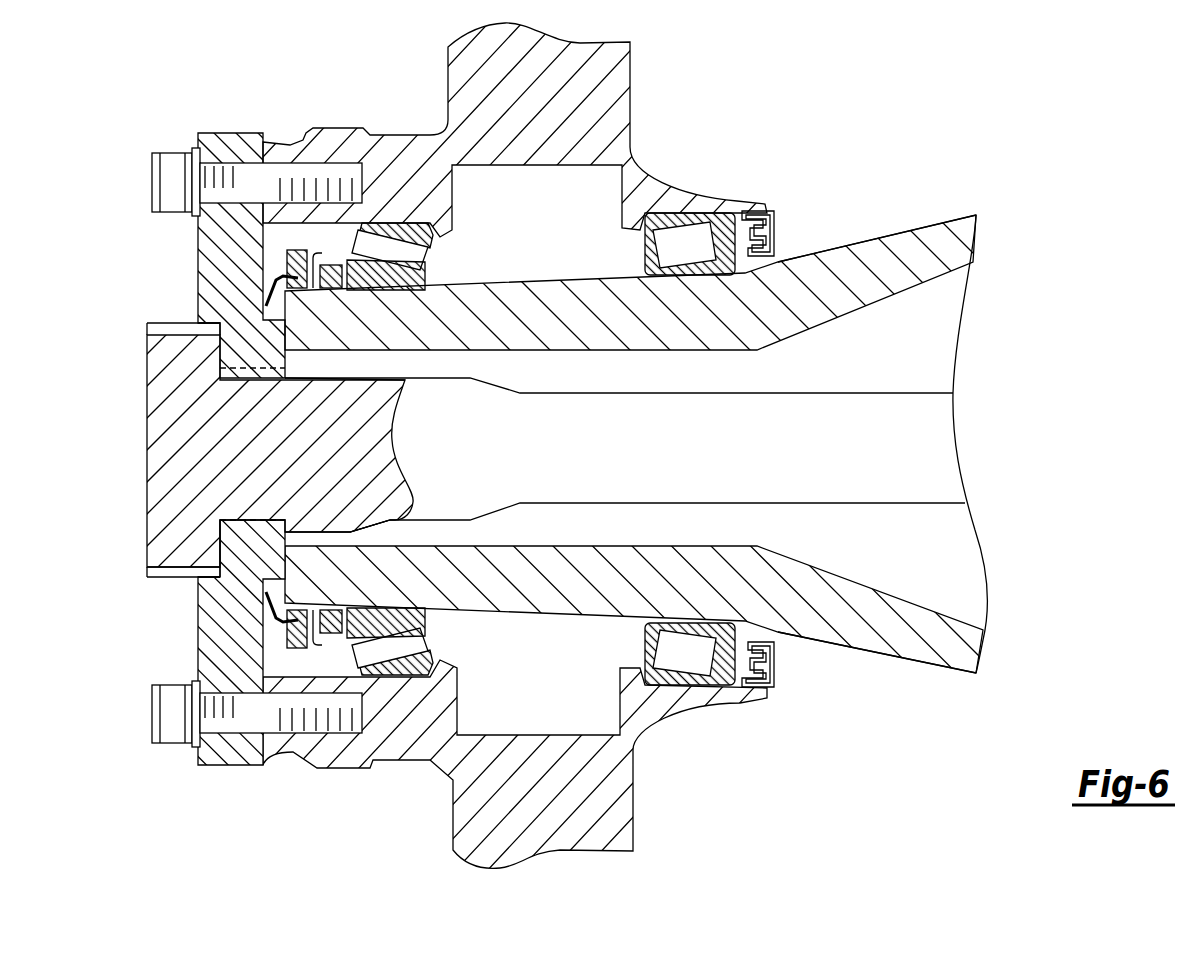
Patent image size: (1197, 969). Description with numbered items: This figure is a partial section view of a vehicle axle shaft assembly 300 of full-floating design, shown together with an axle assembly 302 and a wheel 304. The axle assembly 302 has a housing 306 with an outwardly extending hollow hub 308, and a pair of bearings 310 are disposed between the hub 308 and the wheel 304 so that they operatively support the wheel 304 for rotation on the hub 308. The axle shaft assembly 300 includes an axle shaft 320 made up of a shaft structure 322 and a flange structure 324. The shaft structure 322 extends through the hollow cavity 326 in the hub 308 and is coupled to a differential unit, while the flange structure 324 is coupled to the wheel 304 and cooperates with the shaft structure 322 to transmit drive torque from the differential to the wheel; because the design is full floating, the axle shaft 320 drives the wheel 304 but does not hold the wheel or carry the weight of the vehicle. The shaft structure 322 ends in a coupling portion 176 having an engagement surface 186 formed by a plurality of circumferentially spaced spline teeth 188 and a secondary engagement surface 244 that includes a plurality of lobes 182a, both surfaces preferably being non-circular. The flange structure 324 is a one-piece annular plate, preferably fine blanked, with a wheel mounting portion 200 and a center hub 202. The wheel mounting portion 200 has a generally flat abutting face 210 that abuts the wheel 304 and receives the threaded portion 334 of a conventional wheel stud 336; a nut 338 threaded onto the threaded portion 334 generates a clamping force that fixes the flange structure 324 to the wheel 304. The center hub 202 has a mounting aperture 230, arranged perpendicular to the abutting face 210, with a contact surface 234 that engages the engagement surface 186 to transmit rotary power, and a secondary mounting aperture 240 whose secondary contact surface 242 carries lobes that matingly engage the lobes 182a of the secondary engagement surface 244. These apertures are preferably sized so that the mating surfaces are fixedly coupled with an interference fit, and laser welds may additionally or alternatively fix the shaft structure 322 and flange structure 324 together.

The axle shaft assembly 300 is at (621, 447).
The axle assembly 302 is at (838, 303).
The wheel 304 is at (560, 70).
The housing 306 is at (933, 643).
The hollow hub 308 is at (605, 557).
The bearings 310 is at (690, 242).
The axle shaft 320 is at (750, 449).
The shaft structure 322 is at (760, 420).
The flange structure 324 is at (263, 255).
The hollow cavity 326 is at (470, 527).
The threaded portion 334 is at (214, 175).
The wheel stud 336 is at (255, 184).
The nut 338 is at (166, 160).
The coupling portion 176 is at (314, 539).
The lobes 182a is at (324, 425).
The engagement surface 186 is at (330, 413).
The spline teeth 188 is at (245, 520).
The wheel mounting portion 200 is at (207, 757).
The center hub 202 is at (267, 619).
The abutting face 210 is at (267, 655).
The mounting aperture 230 is at (292, 360).
The contact surface 234 is at (240, 362).
The secondary mounting aperture 240 is at (209, 321).
The secondary contact surface 242 is at (217, 552).
The secondary engagement surface 244 is at (155, 327).